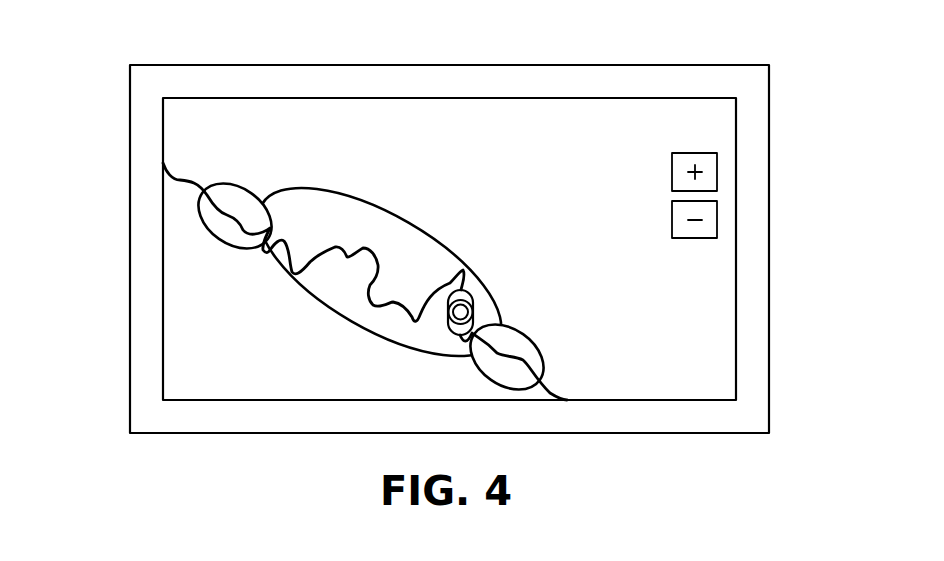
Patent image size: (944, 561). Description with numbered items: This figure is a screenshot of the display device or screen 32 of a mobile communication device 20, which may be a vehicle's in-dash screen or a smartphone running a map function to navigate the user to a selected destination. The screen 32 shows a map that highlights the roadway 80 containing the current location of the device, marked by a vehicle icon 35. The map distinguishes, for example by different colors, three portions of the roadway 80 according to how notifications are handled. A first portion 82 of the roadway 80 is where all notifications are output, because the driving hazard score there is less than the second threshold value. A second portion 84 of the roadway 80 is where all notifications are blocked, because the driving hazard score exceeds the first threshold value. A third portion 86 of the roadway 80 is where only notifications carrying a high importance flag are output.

The mobile communication device 20 is at (195, 65).
The display device or screen 32 is at (717, 98).
The roadway 80 is at (448, 213).
The second portion of the roadway 84 is at (355, 194).
The third portion of the roadway 86 is at (218, 224).
The first portion of the roadway 82 is at (531, 386).
The vehicle icon 35 is at (473, 310).